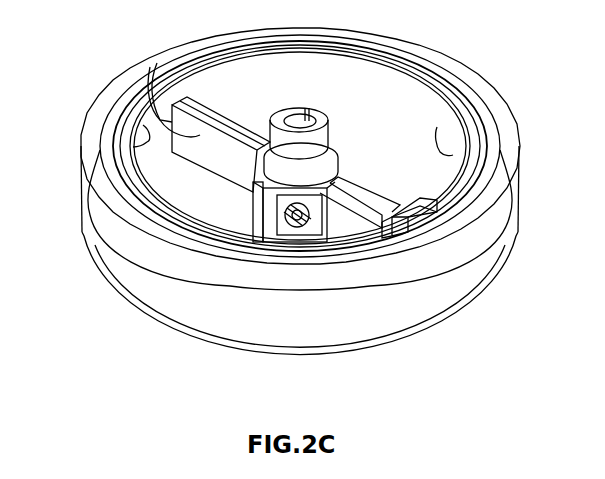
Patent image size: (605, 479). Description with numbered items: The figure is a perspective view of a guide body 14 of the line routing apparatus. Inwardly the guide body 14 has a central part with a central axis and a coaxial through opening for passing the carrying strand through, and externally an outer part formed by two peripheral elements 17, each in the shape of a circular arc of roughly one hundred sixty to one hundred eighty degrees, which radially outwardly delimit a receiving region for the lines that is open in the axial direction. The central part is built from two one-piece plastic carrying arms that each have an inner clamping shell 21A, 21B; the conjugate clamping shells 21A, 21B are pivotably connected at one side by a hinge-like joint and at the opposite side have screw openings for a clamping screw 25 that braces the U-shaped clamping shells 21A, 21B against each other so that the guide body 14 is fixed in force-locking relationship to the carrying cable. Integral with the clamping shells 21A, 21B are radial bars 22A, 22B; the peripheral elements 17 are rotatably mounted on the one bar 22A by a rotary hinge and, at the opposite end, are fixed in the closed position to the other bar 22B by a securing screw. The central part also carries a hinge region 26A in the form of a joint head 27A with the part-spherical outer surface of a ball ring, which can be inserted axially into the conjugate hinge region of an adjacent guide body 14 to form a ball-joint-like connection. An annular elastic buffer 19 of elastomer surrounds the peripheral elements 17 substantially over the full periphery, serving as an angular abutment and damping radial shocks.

The guide body 14 is at (103, 57).
The peripheral element 17 is at (143, 125).
The annular elastic buffer 19 is at (435, 305).
The clamping shell 21A is at (380, 215).
The clamping shell 21B is at (243, 150).
The radial bar 22A is at (447, 200).
The radial bar 22B is at (200, 135).
The clamping screw 25 is at (267, 210).
The hinge region 26A is at (299, 90).
The joint head 27A is at (340, 137).